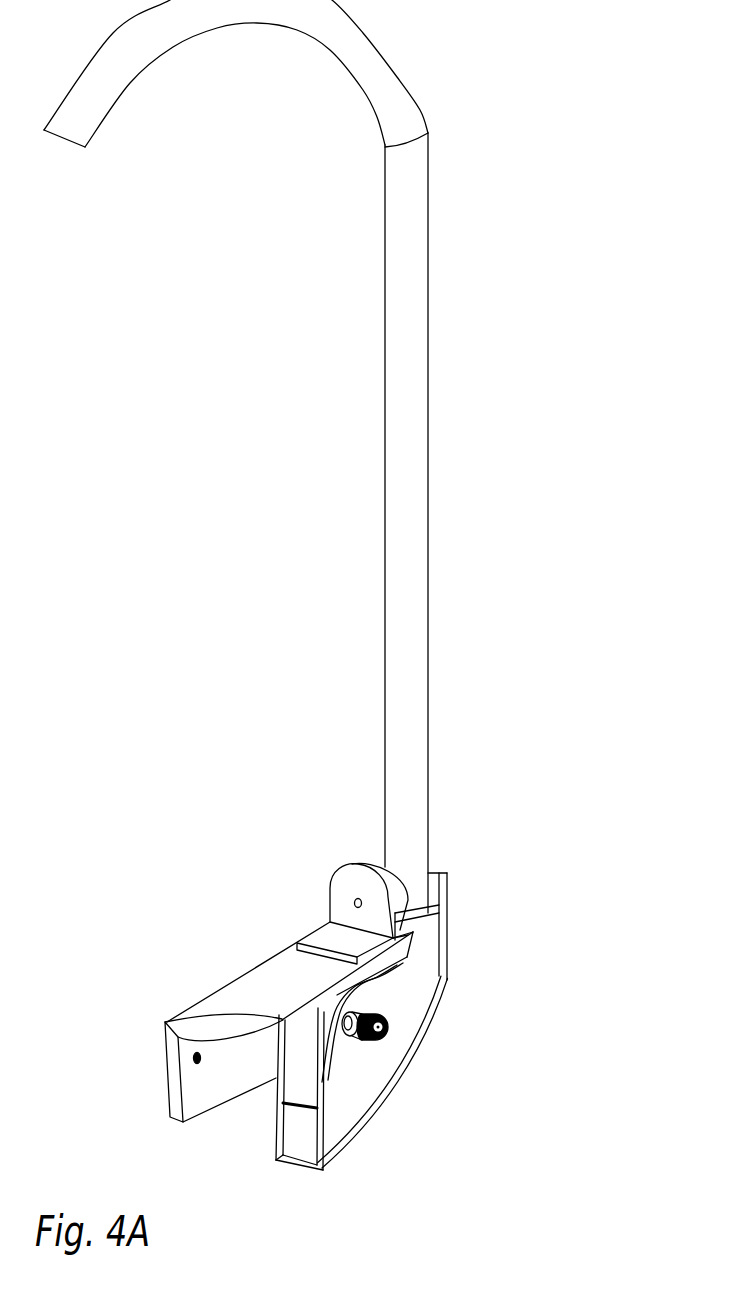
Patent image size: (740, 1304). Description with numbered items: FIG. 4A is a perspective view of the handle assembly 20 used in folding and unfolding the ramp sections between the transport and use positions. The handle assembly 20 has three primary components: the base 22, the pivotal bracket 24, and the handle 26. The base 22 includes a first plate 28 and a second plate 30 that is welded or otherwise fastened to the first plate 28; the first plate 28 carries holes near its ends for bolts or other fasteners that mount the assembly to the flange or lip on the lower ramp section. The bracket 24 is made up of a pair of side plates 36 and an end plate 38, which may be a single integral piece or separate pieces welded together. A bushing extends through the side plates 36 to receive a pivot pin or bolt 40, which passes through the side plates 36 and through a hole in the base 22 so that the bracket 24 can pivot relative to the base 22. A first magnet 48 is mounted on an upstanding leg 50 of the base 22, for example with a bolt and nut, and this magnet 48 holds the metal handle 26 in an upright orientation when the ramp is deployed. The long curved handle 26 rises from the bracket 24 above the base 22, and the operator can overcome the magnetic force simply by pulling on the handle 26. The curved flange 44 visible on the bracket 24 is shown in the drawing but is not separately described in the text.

The handle assembly 20 is at (530, 634).
The base 22 is at (172, 1097).
The pivotal bracket 24 is at (413, 1007).
The handle 26 is at (122, 48).
The first plate 28 is at (210, 1090).
The second plate 30 is at (275, 967).
The side plates 36 is at (338, 1080).
The end plate 38 is at (293, 1167).
The pivot pin or bolt 40 is at (380, 1037).
The curved flange 44 is at (317, 1015).
The first magnet 48 is at (380, 865).
The upstanding leg 50 is at (342, 890).